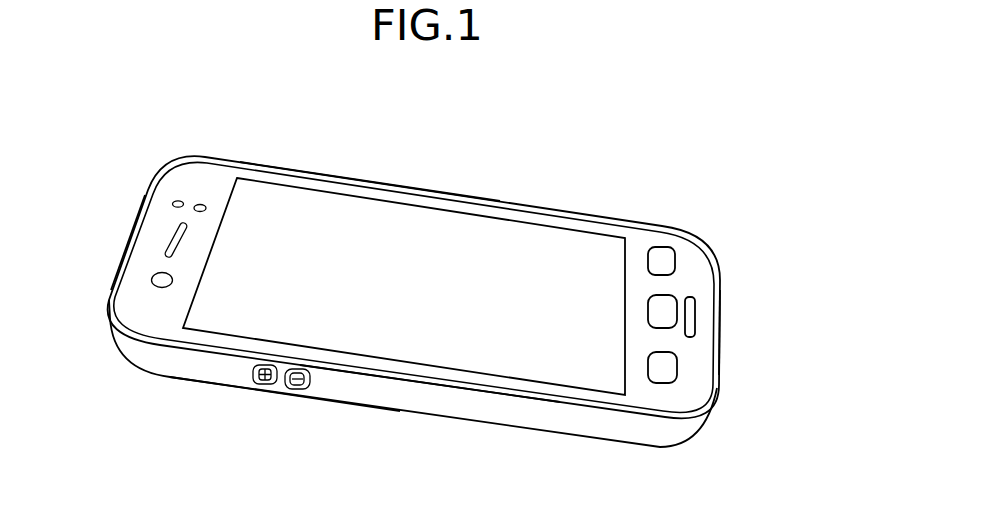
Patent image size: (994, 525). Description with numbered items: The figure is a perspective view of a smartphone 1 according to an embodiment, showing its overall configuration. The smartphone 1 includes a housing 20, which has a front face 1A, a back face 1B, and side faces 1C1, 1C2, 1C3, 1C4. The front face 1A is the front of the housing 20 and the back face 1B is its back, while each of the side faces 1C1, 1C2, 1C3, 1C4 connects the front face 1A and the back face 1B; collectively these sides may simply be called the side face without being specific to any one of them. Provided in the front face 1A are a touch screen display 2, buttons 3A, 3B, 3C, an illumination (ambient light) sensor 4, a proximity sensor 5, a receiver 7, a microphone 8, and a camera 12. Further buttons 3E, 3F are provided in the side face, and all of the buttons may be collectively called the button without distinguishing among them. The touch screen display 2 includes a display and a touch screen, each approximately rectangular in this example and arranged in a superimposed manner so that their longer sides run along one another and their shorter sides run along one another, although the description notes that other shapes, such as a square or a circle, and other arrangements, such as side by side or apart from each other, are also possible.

The smartphone 1 is at (474, 131).
The front face 1A is at (138, 308).
The back face 1B is at (170, 377).
The side face 1C1 is at (155, 180).
The side face 1C2 is at (722, 355).
The side face 1C3 is at (483, 406).
The side face 1C4 is at (362, 173).
The touch screen display 2 is at (493, 233).
The button 3A is at (677, 377).
The button 3B is at (667, 295).
The button 3C is at (662, 247).
The button 3E is at (270, 384).
The button 3F is at (301, 389).
The illumination sensor 4 is at (173, 204).
The proximity sensor 5 is at (200, 203).
The receiver 7 is at (172, 238).
The microphone 8 is at (695, 318).
The camera 12 is at (151, 278).
The housing 20 is at (228, 368).